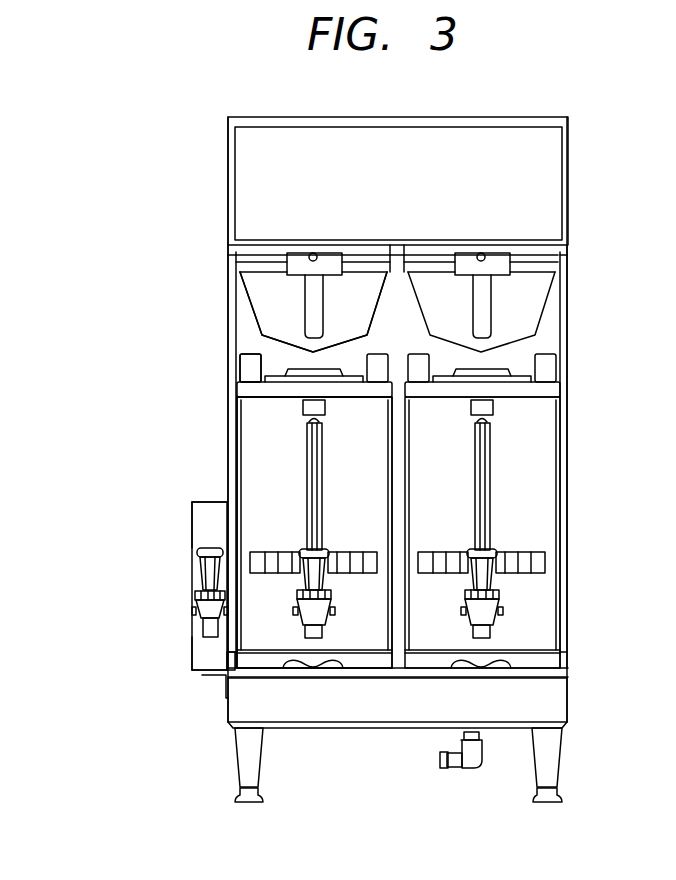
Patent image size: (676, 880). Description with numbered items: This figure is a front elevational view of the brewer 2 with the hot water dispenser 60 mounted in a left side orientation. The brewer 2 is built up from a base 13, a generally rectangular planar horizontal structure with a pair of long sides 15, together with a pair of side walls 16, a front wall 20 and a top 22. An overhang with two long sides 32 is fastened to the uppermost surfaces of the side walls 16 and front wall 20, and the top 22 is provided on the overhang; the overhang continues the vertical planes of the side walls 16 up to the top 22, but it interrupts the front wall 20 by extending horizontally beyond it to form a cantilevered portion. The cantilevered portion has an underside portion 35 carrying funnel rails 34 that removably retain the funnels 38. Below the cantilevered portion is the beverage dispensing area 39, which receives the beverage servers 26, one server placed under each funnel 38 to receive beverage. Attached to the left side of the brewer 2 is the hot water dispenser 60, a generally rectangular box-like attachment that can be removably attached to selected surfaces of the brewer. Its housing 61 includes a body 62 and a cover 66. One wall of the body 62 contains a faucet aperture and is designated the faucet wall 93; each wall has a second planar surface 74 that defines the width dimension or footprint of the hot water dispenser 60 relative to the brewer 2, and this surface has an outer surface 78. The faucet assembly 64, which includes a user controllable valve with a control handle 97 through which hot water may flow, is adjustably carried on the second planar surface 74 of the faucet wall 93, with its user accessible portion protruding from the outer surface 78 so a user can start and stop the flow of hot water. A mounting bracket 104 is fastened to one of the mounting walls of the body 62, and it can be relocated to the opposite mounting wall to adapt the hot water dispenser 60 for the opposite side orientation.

The brewer 2 is at (183, 98).
The base 13 is at (224, 708).
The long sides 15 is at (252, 708).
The side walls 16 is at (228, 312).
The front wall 20 is at (243, 327).
The top 22 is at (252, 118).
The beverage servers 26 is at (262, 407).
The long sides 32 is at (473, 140).
The funnel rails 34 is at (398, 247).
The underside portion 35 is at (247, 276).
The funnels 38 is at (270, 288).
The beverage dispensing area 39 is at (247, 355).
The hot water dispenser 60 is at (188, 502).
The housing 61 is at (189, 623).
The body 62 is at (198, 494).
The faucet assembly 64 is at (208, 607).
The cover 66 is at (193, 568).
The second planar surface 74 is at (203, 653).
The outer surface 78 is at (217, 528).
The faucet wall 93 is at (202, 660).
The control handle 97 is at (193, 553).
The mounting bracket 104 is at (225, 687).